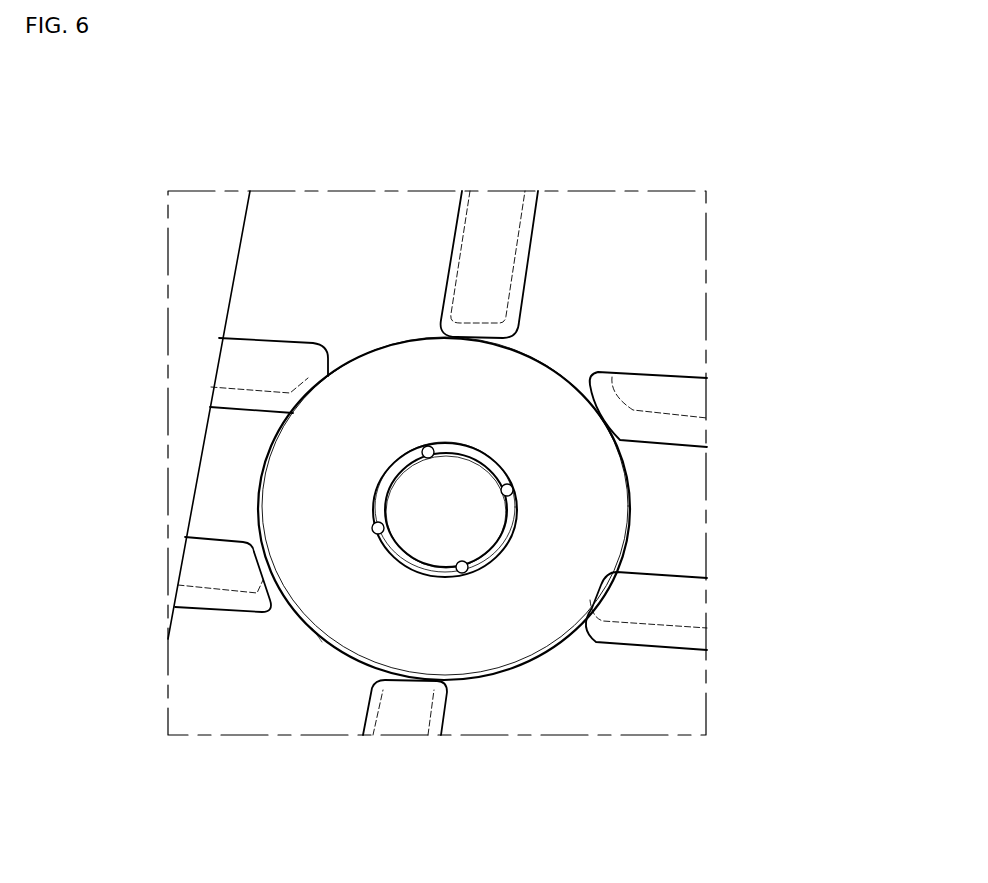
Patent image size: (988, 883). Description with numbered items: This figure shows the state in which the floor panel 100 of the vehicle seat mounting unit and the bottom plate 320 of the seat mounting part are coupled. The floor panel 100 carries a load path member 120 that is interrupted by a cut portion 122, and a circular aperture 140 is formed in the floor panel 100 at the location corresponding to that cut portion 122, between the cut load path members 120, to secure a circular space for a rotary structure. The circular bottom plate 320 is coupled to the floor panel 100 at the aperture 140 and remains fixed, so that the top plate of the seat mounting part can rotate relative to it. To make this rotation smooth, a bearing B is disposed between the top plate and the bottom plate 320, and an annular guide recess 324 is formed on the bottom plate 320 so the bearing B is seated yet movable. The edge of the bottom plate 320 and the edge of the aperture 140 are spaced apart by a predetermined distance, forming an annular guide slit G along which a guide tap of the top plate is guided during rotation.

The floor panel 100 is at (682, 285).
The load path member 120 is at (688, 400).
The cut portion 122 is at (308, 387).
The aperture 140 is at (630, 498).
The bottom plate 320 is at (480, 633).
The annular guide recess 324 is at (513, 533).
The bearing B is at (372, 527).
The annular guide slit G is at (318, 637).